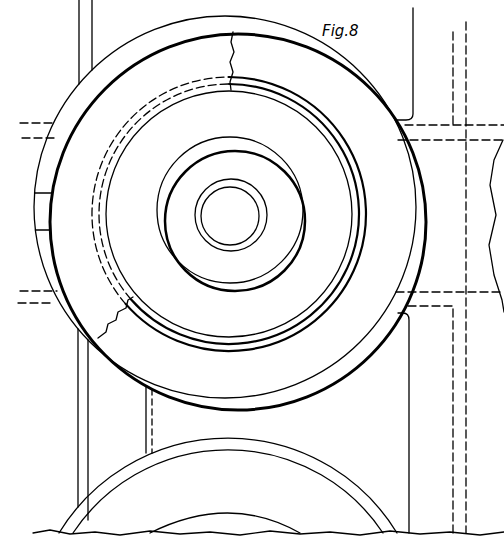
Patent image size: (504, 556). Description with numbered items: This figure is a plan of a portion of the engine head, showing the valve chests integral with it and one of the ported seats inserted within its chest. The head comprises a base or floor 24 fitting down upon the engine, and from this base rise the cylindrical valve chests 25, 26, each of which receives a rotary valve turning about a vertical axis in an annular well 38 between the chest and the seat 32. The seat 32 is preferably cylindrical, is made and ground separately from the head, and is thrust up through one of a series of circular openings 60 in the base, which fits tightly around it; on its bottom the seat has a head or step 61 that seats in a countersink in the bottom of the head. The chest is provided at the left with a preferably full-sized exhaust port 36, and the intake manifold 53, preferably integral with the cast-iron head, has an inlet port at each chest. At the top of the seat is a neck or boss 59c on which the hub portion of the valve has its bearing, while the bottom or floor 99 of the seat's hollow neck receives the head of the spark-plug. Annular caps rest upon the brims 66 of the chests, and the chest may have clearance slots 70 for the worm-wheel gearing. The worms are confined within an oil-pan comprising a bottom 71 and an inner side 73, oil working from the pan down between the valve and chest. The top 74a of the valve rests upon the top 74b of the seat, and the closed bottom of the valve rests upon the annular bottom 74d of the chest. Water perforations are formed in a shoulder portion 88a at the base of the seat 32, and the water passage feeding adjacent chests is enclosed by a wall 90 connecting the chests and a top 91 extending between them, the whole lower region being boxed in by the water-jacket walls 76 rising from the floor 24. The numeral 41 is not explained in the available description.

The base or floor 24 is at (260, 6).
The cylindrical valve chest 25 is at (350, 479).
The cylindrical valve chest 26 is at (337, 383).
The ported seat 32 is at (362, 276).
The exhaust port 36 is at (36, 141).
The annular well 38 is at (399, 197).
The bracket 41 is at (442, 142).
The intake manifold 53 is at (503, 60).
The neck or boss 59c is at (304, 233).
The circular opening 60 is at (114, 166).
The head, shoulder or step 61 is at (284, 90).
The brim 66 is at (76, 318).
The clearance slot 70 is at (48, 203).
The oil-pan bottom 71 is at (58, 418).
The oil-pan inner side 73 is at (88, 452).
The top of the valve 74a is at (155, 74).
The top of the seat 74b is at (321, 160).
The annular bottom of the chest 74d is at (225, 508).
The water-jacket wall 76 is at (467, 391).
The shoulder portion 88a is at (322, 120).
The wall 90 is at (146, 420).
The top 91 is at (310, 429).
The bottom or floor of the neck 99 is at (237, 218).